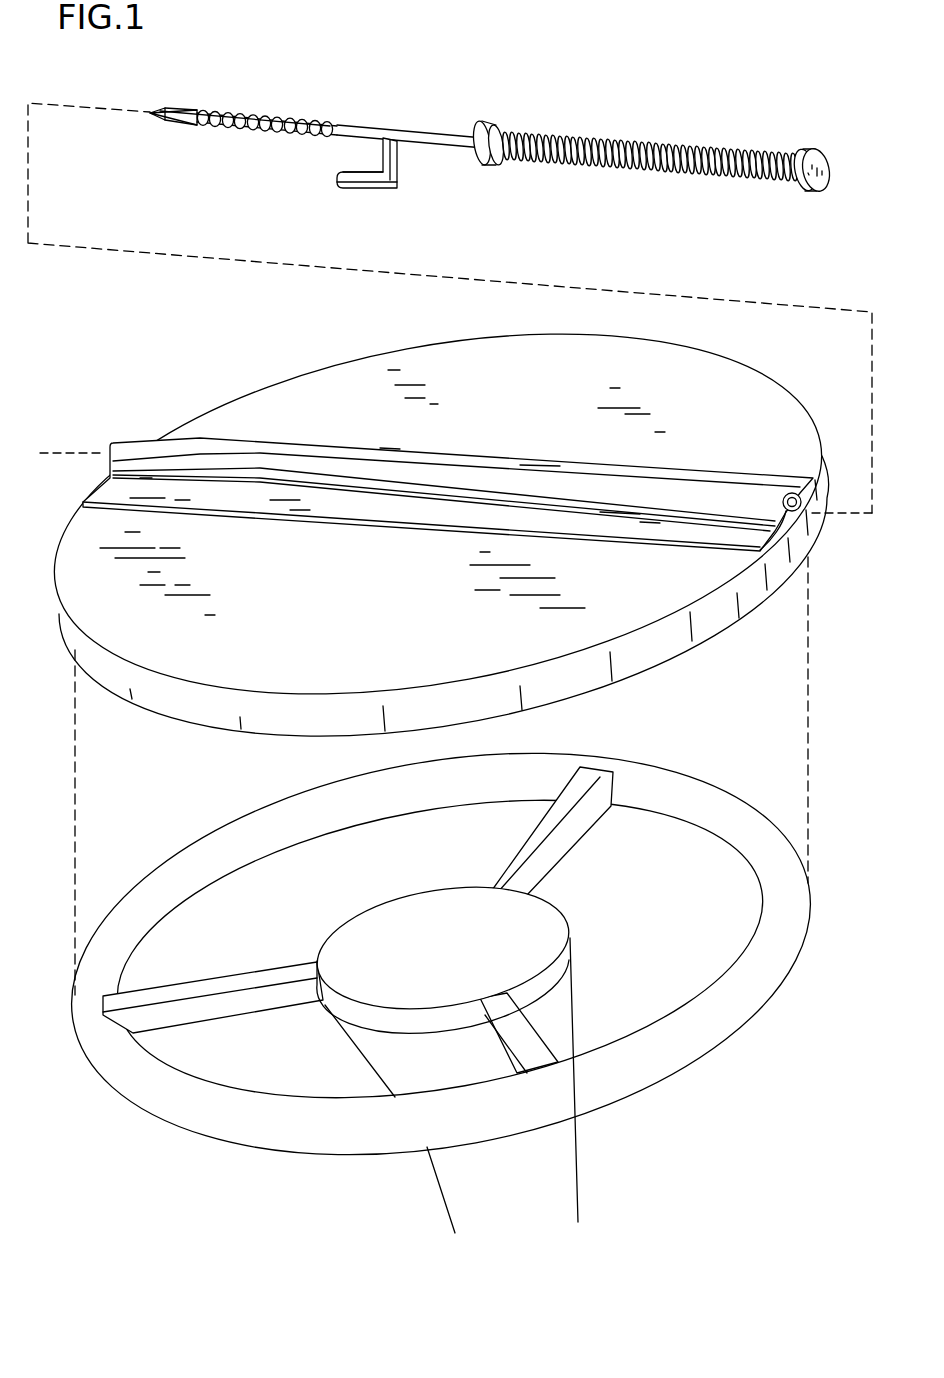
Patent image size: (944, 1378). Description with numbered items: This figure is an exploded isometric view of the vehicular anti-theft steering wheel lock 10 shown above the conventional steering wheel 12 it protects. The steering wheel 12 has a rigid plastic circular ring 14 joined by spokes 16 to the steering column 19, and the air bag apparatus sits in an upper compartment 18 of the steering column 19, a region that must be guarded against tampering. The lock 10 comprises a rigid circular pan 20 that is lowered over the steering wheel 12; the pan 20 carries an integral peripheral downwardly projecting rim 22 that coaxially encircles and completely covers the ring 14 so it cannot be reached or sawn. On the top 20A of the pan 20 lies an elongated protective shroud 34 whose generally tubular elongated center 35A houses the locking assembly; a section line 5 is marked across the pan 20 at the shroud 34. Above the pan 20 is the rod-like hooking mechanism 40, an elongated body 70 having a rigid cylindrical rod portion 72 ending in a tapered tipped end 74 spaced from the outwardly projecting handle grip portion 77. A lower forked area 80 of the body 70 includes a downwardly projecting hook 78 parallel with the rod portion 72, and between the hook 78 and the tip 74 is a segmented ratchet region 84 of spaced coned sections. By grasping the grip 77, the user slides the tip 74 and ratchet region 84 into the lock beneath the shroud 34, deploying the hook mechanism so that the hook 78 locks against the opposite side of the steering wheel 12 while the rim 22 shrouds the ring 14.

The vehicular anti-theft steering wheel lock 10 is at (262, 73).
The steering wheel 12 is at (712, 759).
The circular ring 14 is at (178, 884).
The spokes 16 is at (548, 828).
The upper compartment 18 is at (543, 930).
The steering column 19 is at (548, 1186).
The pan 20 is at (300, 406).
The top of pan 20A is at (258, 606).
The rim 22 is at (172, 697).
The shroud 34 is at (423, 461).
The tubular elongated center 35A is at (757, 510).
The hooking mechanism 40 is at (652, 155).
The elongated body 70 is at (446, 128).
The rod portion 72 is at (380, 125).
The tipped end 74 is at (150, 113).
The handle grip portion 77 is at (605, 173).
The hook 78 is at (360, 180).
The lower forked area 80 is at (330, 153).
The segmented ratchet region 84 is at (231, 137).
The section line 5 is at (60, 453).